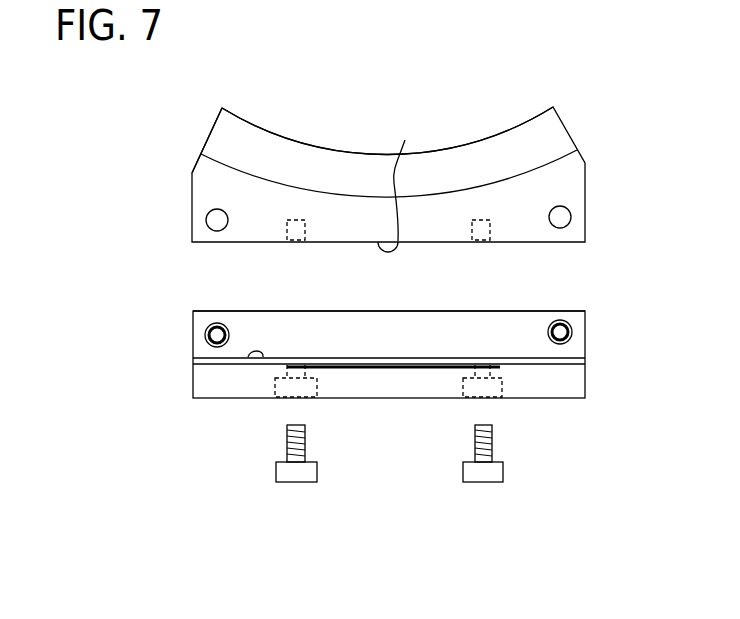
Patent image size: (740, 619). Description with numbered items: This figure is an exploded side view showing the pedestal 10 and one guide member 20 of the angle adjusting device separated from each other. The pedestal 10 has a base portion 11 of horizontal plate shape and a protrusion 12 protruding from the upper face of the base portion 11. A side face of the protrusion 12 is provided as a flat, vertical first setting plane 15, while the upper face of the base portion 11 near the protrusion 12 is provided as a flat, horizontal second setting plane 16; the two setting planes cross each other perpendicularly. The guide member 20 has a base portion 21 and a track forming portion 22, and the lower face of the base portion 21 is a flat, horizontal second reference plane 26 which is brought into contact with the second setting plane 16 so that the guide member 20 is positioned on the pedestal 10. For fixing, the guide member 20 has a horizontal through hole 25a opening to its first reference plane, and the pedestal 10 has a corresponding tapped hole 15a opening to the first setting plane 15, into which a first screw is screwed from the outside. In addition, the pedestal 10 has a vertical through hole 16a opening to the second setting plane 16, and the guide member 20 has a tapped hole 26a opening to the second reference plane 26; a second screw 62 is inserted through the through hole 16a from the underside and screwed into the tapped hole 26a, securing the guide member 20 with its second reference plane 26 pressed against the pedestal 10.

The pedestal 10 is at (386, 368).
The base portion 11 is at (576, 373).
The protrusion 12 is at (587, 337).
The first setting plane 15 is at (523, 333).
The tapped hole 15a is at (205, 333).
The second setting plane 16 is at (248, 358).
The vertical through hole 16a is at (307, 403).
The guide member 20 is at (397, 193).
The base portion 21 is at (201, 164).
The track forming portion 22 is at (318, 158).
The horizontal through hole 25a is at (207, 219).
The second reference plane 26 is at (399, 182).
The tapped hole 26a is at (300, 242).
The screw 62 is at (305, 478).